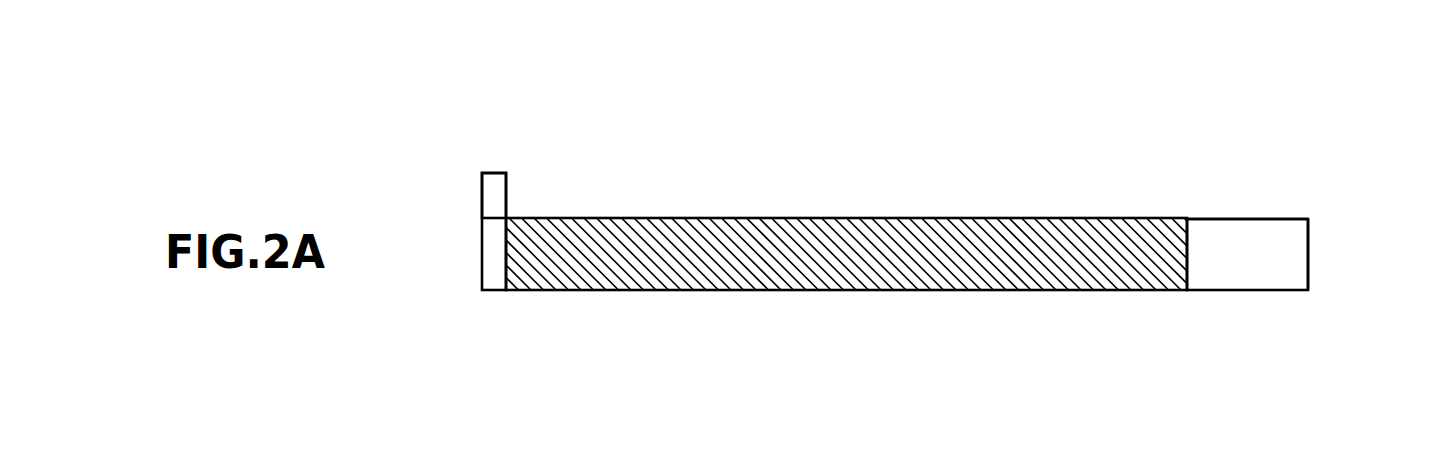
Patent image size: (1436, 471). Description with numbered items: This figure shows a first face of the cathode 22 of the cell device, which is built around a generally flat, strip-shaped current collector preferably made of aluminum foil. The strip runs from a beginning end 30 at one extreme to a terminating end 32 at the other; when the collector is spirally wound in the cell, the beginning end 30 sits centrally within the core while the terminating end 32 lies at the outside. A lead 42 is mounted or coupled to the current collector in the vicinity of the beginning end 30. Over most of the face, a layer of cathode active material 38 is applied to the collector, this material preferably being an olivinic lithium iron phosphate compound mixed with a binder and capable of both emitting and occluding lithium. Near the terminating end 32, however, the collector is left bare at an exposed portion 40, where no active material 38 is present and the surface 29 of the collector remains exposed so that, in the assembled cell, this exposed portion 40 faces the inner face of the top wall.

The cathode 22 is at (906, 144).
The outer surface 29 is at (1216, 218).
The beginning end 30 is at (482, 262).
The terminating end 32 is at (1308, 260).
The cathode active material 38 is at (1013, 240).
The exposed portion 40 is at (1285, 240).
The lead 42 is at (498, 196).